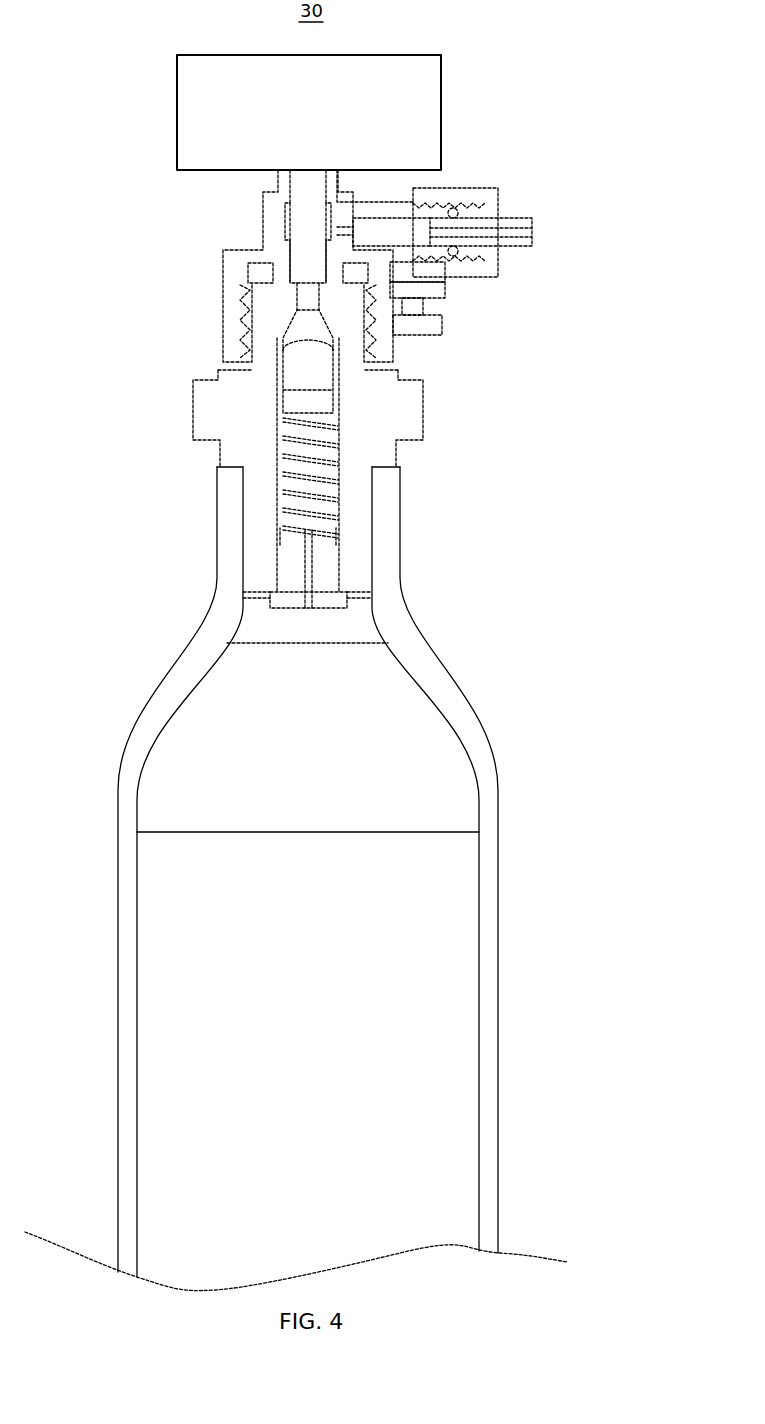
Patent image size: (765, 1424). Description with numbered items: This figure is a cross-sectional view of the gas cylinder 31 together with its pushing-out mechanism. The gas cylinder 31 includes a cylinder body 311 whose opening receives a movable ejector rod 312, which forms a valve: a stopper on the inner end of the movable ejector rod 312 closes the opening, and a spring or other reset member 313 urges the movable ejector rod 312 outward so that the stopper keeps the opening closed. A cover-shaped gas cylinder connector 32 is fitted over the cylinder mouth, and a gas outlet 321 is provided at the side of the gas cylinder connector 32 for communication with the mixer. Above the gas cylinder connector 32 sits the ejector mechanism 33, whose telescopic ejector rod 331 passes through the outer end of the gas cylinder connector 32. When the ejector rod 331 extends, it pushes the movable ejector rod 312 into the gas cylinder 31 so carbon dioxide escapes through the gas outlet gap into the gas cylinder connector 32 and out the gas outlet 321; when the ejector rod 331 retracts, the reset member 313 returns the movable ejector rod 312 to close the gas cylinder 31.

The ejector mechanism 33 is at (441, 98).
The ejector rod 331 is at (303, 218).
The gas cylinder connector 32 is at (230, 283).
The gas outlet 321 is at (396, 232).
The gas cylinder 31 is at (490, 420).
The cylinder body 311 is at (377, 543).
The movable ejector rod 312 is at (320, 375).
The reset member 313 is at (343, 438).